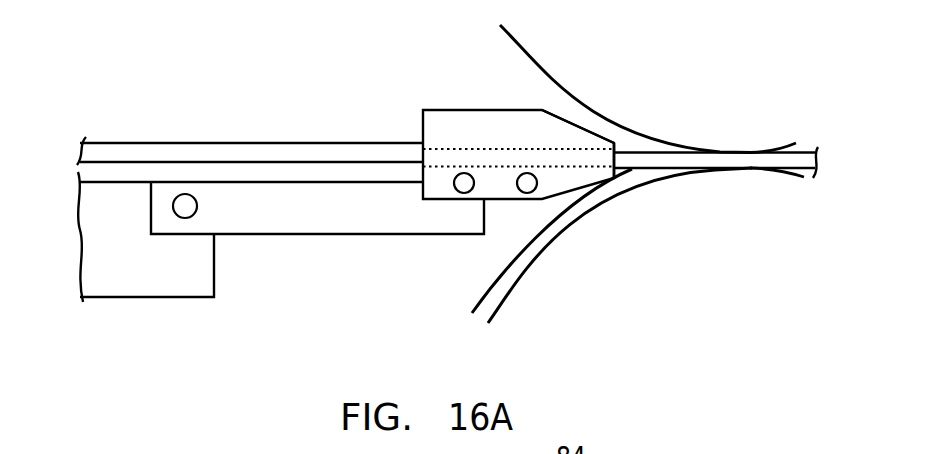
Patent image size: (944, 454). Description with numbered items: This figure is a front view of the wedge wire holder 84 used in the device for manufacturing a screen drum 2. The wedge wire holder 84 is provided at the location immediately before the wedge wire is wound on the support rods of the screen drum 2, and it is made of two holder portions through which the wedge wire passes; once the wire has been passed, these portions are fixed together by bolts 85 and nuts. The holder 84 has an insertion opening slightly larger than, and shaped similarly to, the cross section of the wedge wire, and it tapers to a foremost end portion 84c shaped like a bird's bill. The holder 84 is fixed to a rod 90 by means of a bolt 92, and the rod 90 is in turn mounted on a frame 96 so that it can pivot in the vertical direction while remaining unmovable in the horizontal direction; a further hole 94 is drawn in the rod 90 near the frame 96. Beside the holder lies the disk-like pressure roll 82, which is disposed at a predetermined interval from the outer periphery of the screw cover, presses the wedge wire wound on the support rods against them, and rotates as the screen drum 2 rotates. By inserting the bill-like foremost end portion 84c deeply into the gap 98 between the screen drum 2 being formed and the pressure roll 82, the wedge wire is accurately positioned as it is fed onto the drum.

The screen drum 2 is at (543, 295).
The pressure roll 82 is at (545, 43).
The wedge wire holder 84 is at (440, 133).
The foremost end portion 84c is at (580, 145).
The bolt 85 is at (527, 185).
The rod 90 is at (302, 208).
The bolt 92 is at (463, 184).
The fixing hole 94 is at (184, 208).
The frame 96 is at (118, 235).
The gap 98 is at (583, 118).